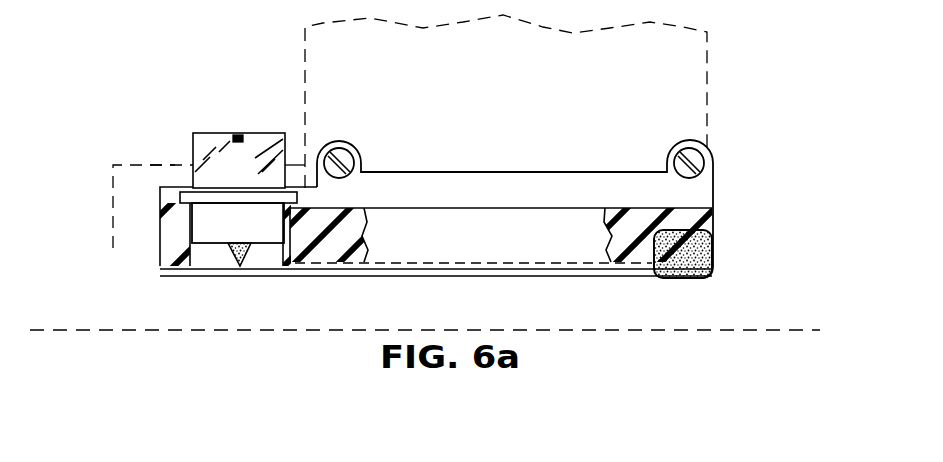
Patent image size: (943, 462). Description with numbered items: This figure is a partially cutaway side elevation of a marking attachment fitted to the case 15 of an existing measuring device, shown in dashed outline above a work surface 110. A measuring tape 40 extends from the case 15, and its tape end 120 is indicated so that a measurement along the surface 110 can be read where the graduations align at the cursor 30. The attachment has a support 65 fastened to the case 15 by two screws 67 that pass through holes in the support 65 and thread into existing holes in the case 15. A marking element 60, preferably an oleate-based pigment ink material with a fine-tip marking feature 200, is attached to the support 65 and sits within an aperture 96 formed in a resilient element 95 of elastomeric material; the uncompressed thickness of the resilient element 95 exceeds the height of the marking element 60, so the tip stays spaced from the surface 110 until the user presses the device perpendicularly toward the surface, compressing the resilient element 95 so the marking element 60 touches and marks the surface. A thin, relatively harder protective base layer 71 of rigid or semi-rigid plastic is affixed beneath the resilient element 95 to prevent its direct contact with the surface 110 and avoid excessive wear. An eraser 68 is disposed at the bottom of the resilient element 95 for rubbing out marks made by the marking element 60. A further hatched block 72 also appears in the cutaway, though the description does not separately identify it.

The case 15 is at (709, 62).
The tape end 120 is at (113, 190).
The surface 110 is at (96, 328).
The measuring tape 40 is at (152, 163).
The cursor 30 is at (239, 135).
The marking element 60 is at (252, 228).
The fine-tip marking feature 200 is at (239, 268).
The aperture 96 is at (260, 252).
The support 65 is at (465, 172).
The screws 67 is at (336, 148).
The left support block 72 is at (355, 262).
The resilient element 95 is at (643, 260).
The eraser 68 is at (688, 280).
The protective base layer 71 is at (432, 272).